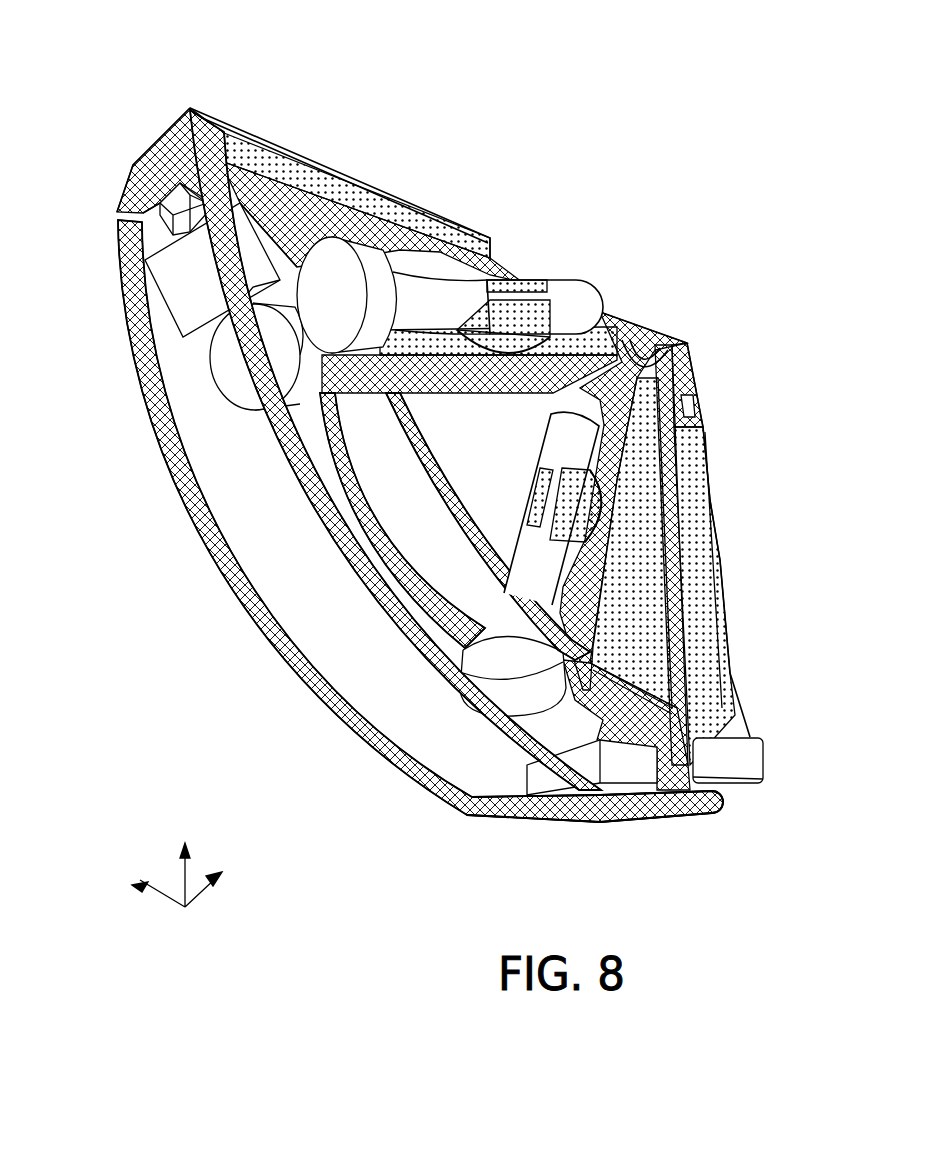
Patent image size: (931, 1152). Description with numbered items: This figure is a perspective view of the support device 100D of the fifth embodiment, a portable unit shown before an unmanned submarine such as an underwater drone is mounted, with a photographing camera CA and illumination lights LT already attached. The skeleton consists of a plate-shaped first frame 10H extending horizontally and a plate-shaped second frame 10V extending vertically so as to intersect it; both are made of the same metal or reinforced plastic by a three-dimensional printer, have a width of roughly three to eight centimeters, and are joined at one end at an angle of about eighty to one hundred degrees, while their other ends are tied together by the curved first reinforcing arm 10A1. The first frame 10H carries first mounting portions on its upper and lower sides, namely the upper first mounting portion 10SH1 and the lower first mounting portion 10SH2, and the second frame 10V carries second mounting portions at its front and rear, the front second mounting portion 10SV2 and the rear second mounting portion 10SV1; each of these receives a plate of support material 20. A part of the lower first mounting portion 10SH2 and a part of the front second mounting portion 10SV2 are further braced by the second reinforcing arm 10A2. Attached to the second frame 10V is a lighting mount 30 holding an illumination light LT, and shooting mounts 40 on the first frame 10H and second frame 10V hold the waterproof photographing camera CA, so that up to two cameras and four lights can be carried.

The support device 100D is at (152, 32).
The support material 20 is at (260, 158).
The upper first mounting portion 10SH1 is at (332, 165).
The lower first mounting portion 10SH2 is at (440, 377).
The rear second mounting portion 10SV1 is at (713, 568).
The front second mounting portion 10SV2 is at (715, 697).
The first frame 10H is at (640, 337).
The second frame 10V is at (703, 807).
The first reinforcing arm 10A1 is at (277, 650).
The second reinforcing arm 10A2 is at (412, 580).
The lighting mount 30 is at (523, 273).
The illumination light LT is at (570, 293).
The photographing camera CA is at (172, 273).
The shooting mount 40 is at (165, 200).